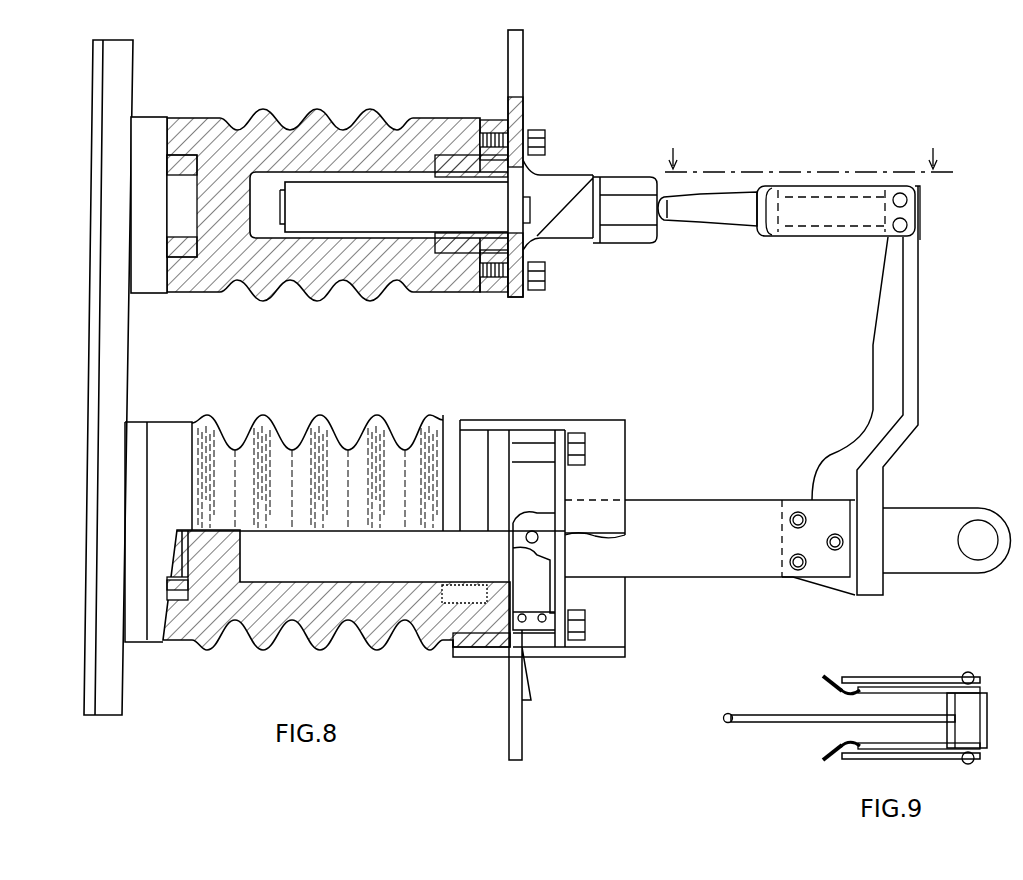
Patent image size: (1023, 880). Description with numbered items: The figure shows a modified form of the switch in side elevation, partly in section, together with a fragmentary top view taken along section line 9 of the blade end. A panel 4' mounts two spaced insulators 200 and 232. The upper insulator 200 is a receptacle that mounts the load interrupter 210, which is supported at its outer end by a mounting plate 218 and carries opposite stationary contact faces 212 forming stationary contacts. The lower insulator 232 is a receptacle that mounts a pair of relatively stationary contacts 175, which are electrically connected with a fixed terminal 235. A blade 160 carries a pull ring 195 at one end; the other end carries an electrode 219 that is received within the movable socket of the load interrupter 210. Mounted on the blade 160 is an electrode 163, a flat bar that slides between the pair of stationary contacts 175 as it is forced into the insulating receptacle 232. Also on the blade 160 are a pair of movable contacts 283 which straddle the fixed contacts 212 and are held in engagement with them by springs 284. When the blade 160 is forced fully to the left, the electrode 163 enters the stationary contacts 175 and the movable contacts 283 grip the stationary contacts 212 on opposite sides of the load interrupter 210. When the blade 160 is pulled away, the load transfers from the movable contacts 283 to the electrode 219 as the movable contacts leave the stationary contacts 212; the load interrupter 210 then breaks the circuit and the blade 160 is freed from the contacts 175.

In FIG. 8, the panel 4' is at (124, 377).
In FIG. 8, the insulator 200 is at (293, 110).
In FIG. 8, the load interrupter 210 is at (380, 219).
In FIG. 8, the mounting plate 218 is at (524, 52).
In FIG. 8, the stationary contact faces 212 is at (563, 190).
In FIG. 8, the electrode 219 is at (718, 226).
In FIG. 9, the electrode 219 is at (752, 713).
In FIG. 8, the movable contacts 283 is at (772, 240).
In FIG. 9, the movable contacts 283 is at (866, 696).
In FIG. 8, the section line 9- 9 is at (810, 149).
In FIG. 8, the blade 160 is at (913, 358).
In FIG. 8, the electrode 163 is at (685, 503).
In FIG. 8, the pull ring 195 is at (928, 508).
In FIG. 8, the insulator 232 is at (298, 654).
In FIG. 8, the stationary contacts 175 is at (523, 576).
In FIG. 8, the fixed terminal 235 is at (524, 732).
In FIG. 9, the springs 284 is at (910, 676).